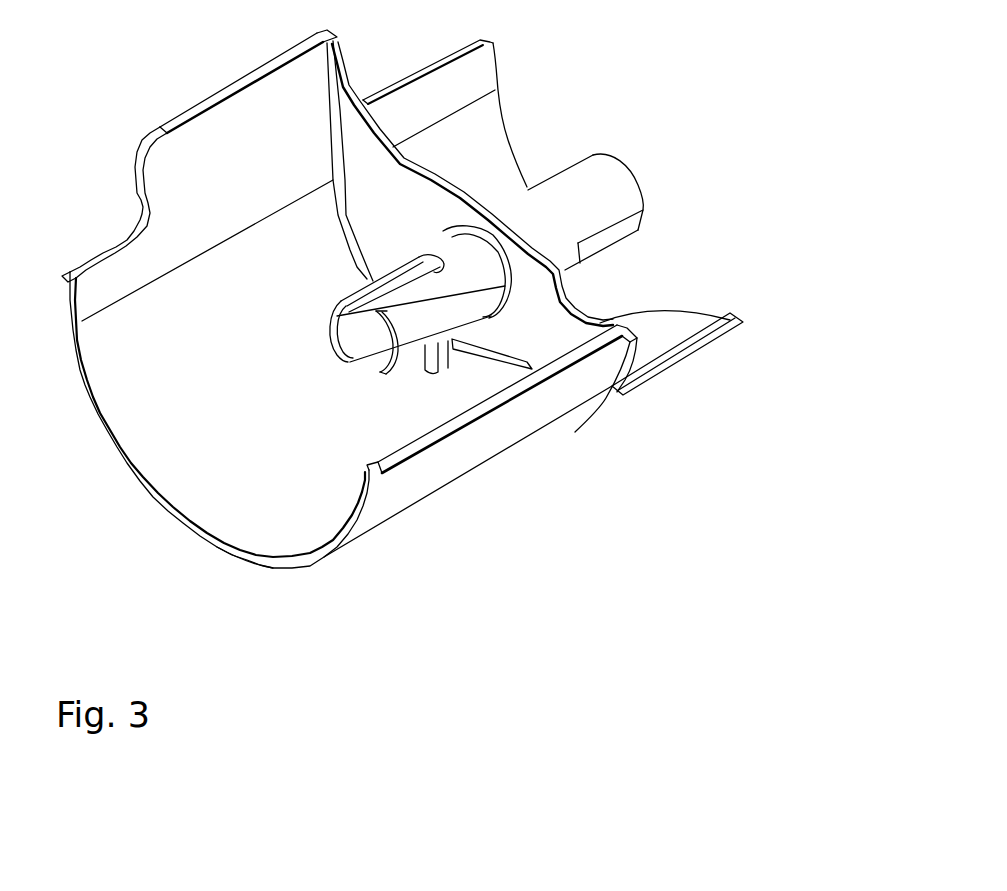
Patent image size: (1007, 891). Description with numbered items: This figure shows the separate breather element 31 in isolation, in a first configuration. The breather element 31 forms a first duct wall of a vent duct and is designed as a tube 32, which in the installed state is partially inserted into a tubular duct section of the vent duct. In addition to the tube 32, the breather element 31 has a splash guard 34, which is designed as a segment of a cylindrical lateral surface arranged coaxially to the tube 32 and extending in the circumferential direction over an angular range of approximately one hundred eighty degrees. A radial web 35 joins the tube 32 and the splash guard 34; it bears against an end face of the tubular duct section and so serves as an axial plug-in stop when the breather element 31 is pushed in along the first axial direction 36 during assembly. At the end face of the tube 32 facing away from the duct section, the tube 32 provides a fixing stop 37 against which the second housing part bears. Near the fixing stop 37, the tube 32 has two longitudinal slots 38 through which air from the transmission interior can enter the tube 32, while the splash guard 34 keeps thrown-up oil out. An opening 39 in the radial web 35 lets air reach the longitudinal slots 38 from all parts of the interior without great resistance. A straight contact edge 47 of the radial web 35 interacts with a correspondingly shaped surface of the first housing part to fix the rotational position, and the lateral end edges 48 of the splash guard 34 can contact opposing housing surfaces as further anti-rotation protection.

The breather element 31 is at (400, 525).
The tube 32 is at (620, 252).
The splash guard 34 is at (273, 567).
The radial web 35 is at (603, 320).
The first axial direction 36 is at (660, 158).
The fixing stop 37 is at (387, 367).
The longitudinal slots 38 is at (401, 283).
The opening 39 is at (507, 375).
The contact edge 47 is at (463, 195).
The lateral end edges 48 is at (231, 85).